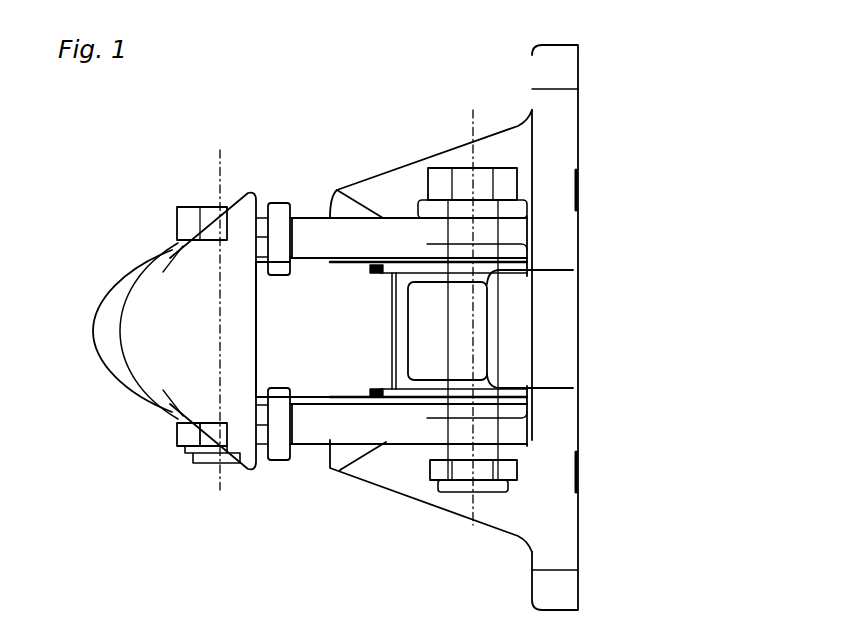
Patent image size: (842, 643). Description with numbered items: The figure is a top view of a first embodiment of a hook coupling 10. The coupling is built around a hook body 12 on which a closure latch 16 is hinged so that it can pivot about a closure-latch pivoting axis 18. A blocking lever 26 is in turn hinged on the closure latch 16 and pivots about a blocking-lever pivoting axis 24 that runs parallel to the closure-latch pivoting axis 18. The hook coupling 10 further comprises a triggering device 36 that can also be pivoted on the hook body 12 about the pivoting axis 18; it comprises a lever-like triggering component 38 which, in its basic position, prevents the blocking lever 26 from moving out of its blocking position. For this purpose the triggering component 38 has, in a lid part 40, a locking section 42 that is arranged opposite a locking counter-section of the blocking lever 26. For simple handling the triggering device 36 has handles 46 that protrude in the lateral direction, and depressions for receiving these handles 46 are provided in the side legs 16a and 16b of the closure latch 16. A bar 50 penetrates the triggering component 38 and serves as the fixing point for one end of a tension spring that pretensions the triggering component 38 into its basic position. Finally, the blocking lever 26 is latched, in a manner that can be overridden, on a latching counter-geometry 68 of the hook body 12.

The hook coupling 10 is at (630, 121).
The hook body 12 is at (112, 297).
The closure latch 16 is at (195, 348).
The side leg 16a is at (366, 441).
The side leg 16b is at (408, 250).
The closure-latch pivoting axis 18 is at (473, 166).
The blocking-lever pivoting axis 24 is at (225, 158).
The blocking lever 26 is at (390, 446).
The triggering device 36 is at (321, 390).
The triggering component 38 is at (340, 339).
The lid part 40 is at (340, 286).
The locking section 42 is at (398, 323).
The handles 46 is at (276, 202).
The bar 50 is at (344, 216).
The latching counter-geometry 68 is at (493, 325).